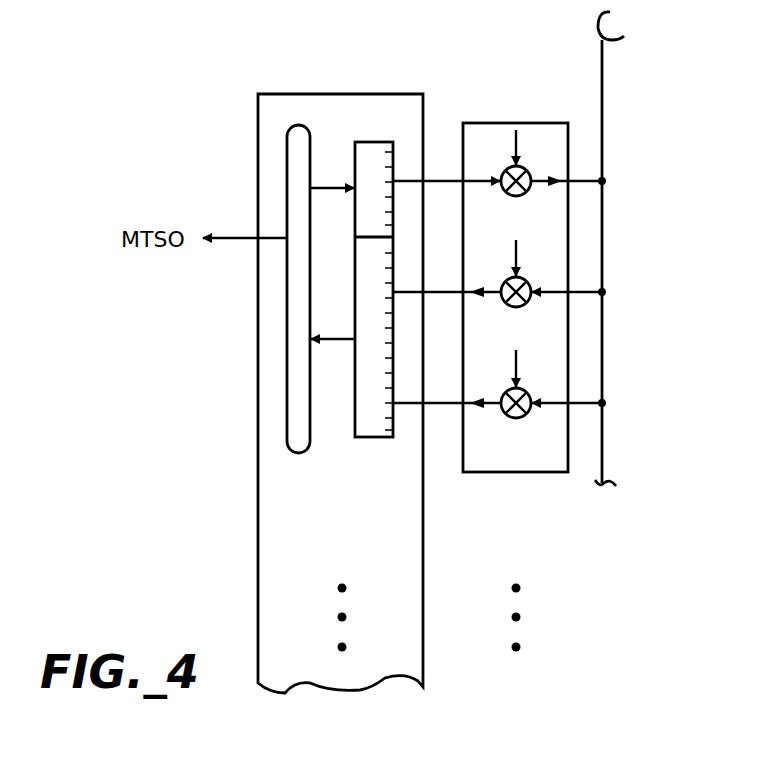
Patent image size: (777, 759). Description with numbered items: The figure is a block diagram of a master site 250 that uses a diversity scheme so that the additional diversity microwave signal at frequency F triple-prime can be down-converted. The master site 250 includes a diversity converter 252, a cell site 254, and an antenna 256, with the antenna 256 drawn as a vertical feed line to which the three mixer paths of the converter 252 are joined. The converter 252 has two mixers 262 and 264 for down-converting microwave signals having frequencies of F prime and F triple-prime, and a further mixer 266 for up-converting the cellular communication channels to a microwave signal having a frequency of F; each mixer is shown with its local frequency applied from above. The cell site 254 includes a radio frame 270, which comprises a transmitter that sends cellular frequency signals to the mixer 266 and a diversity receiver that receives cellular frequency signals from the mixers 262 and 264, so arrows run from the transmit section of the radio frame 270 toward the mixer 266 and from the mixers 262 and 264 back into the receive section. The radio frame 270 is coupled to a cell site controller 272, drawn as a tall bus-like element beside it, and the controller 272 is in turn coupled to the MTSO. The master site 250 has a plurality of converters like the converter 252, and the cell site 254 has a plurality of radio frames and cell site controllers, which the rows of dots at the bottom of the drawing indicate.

The master site 250 is at (205, 135).
The diversity converter 252 is at (523, 123).
The cell site 254 is at (423, 570).
The antenna 256 is at (592, 14).
The mixer 262 is at (510, 307).
The mixer 264 is at (510, 418).
The mixer 266 is at (510, 196).
The radio frame 270 is at (370, 142).
The cell site controller 272 is at (304, 453).